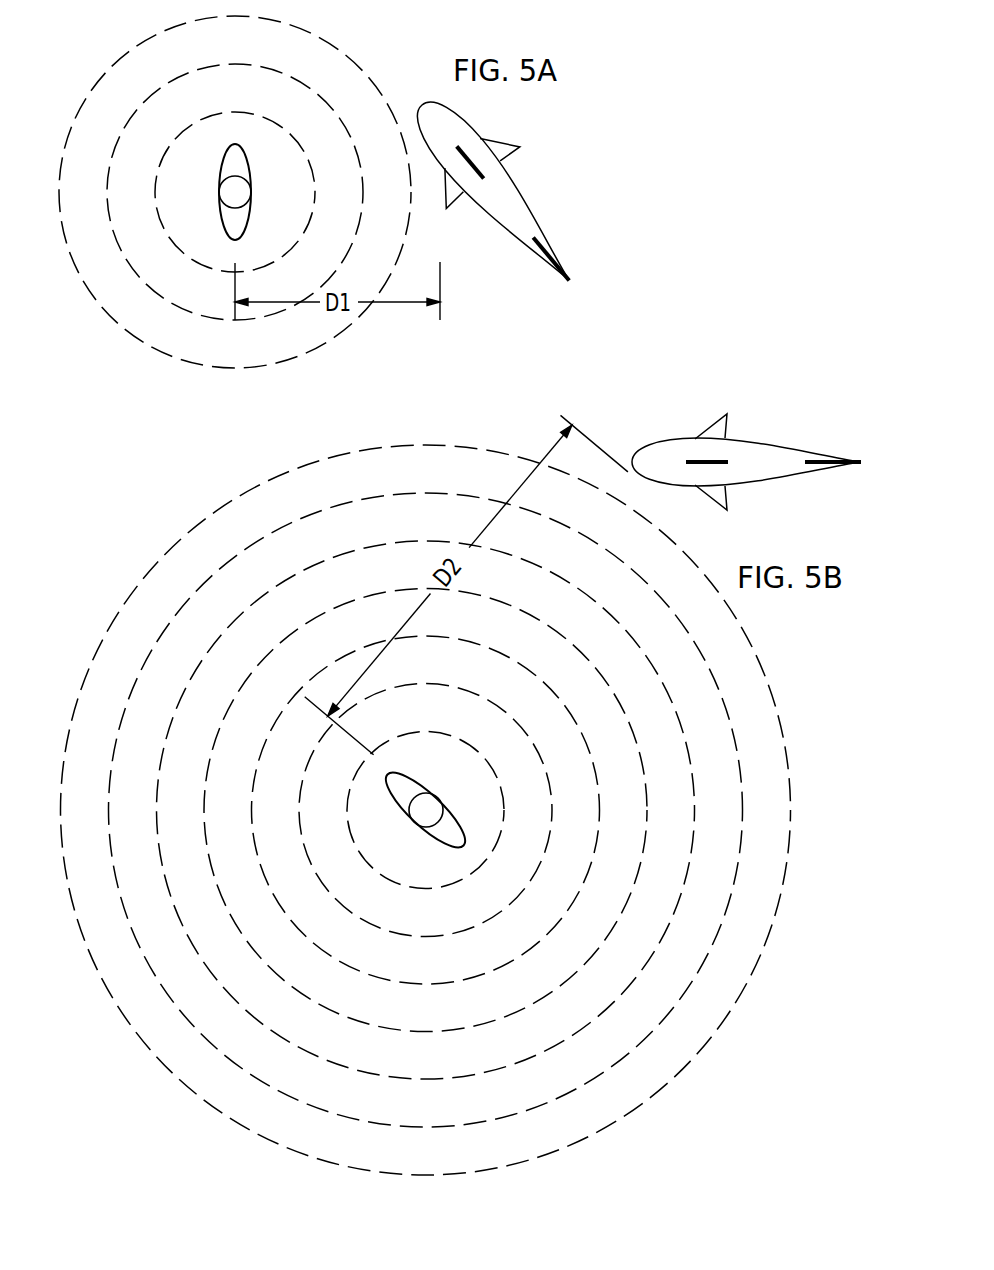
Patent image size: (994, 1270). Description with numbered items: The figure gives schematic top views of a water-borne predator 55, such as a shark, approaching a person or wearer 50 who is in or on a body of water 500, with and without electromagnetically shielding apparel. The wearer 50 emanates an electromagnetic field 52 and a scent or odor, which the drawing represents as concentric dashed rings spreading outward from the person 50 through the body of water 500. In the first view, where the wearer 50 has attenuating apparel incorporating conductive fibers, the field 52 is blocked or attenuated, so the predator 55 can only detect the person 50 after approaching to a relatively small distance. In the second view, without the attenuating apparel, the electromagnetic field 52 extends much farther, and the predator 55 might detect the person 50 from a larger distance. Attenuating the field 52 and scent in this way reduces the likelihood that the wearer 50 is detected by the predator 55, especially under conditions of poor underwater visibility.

In FIG. 5A, the wearer 50 is at (237, 215).
In FIG. 5B, the wearer 50 is at (425, 820).
In FIG. 5A, the electromagnetic field 52 is at (178, 78).
In FIG. 5B, the electromagnetic field 52 is at (320, 615).
In FIG. 5A, the water-borne predator 55 is at (527, 194).
In FIG. 5B, the water-borne predator 55 is at (763, 450).
In FIG. 5A, the body of water 500 is at (234, 206).
In FIG. 5B, the body of water 500 is at (426, 810).